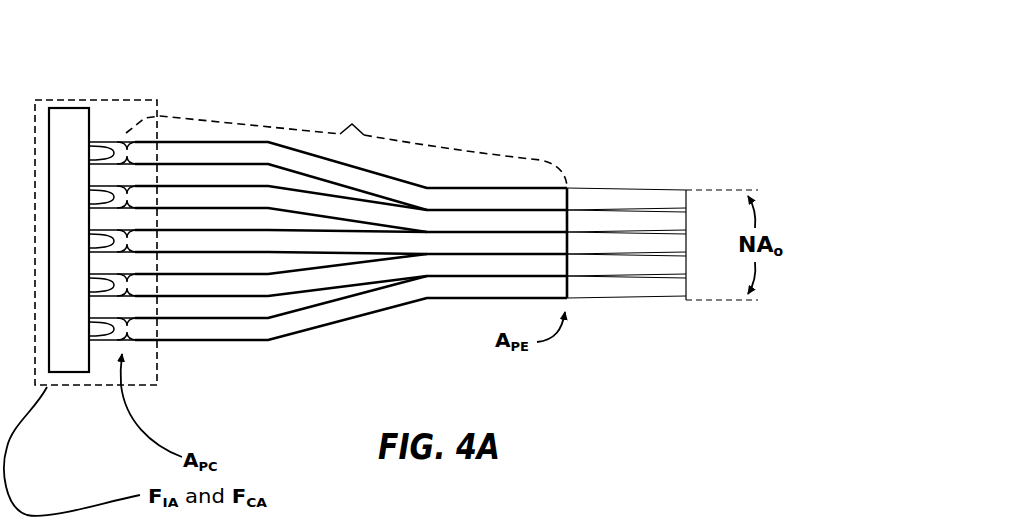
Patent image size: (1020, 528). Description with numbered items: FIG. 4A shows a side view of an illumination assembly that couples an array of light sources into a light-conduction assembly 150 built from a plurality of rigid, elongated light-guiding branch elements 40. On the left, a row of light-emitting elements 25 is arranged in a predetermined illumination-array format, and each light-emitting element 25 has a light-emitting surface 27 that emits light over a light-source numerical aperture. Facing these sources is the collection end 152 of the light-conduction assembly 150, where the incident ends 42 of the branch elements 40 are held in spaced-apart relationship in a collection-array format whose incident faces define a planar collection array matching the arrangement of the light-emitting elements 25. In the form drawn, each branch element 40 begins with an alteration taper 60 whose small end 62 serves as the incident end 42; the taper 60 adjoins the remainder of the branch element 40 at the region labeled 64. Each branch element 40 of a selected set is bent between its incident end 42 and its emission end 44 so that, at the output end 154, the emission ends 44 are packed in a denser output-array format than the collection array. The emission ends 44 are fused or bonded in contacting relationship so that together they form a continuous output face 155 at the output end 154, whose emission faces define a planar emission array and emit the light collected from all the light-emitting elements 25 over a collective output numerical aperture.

The light-emitting element 25 is at (97, 152).
The light-emitting surface 27 is at (97, 197).
The collection end 152 is at (134, 113).
The light-conduction assembly 150 is at (451, 141).
The output end 154 is at (572, 169).
The output face 155 is at (570, 213).
The light-guiding branch element 40 is at (290, 283).
The emission end 44 is at (677, 366).
The alteration taper 60 is at (127, 341).
The fiber input channel 64 is at (135, 327).
The small end 62 is at (82, 397).
The incident end 42 is at (122, 331).